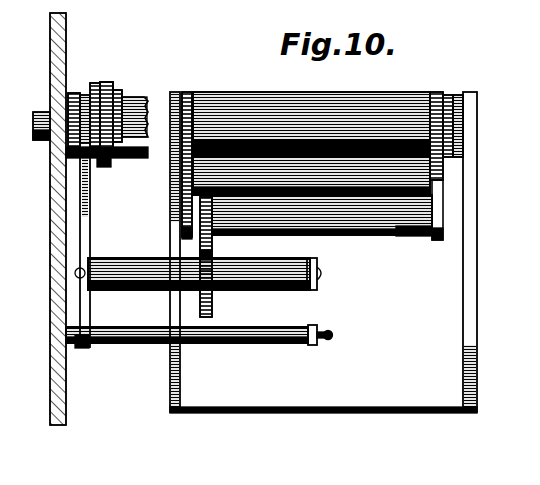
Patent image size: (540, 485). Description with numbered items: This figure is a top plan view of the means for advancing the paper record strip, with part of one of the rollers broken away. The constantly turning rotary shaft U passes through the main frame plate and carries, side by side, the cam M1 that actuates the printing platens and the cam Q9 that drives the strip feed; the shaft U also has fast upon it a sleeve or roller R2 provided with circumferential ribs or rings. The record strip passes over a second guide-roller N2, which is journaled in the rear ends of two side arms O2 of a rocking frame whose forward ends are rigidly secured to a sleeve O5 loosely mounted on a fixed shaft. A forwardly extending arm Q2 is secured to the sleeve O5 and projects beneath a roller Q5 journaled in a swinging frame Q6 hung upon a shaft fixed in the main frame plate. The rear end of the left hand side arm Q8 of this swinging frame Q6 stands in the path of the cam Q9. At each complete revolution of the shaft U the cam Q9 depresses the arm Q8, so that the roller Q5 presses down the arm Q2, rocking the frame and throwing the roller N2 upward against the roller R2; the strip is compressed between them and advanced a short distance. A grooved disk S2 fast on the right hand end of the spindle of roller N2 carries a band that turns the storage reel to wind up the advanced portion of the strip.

The rotary shaft U is at (43, 112).
The cam M1 is at (62, 153).
The cam Q9 is at (85, 95).
The sleeve or roller R2 is at (137, 97).
The left hand side arm Q8 is at (90, 232).
The side arms O2 is at (186, 212).
The guide-roller N2 is at (285, 97).
The sleeve O5 is at (407, 237).
The grooved disk S2 is at (452, 97).
The forwardly extending arm Q2 is at (212, 249).
The roller Q5 is at (275, 290).
The swinging frame Q6 is at (327, 330).